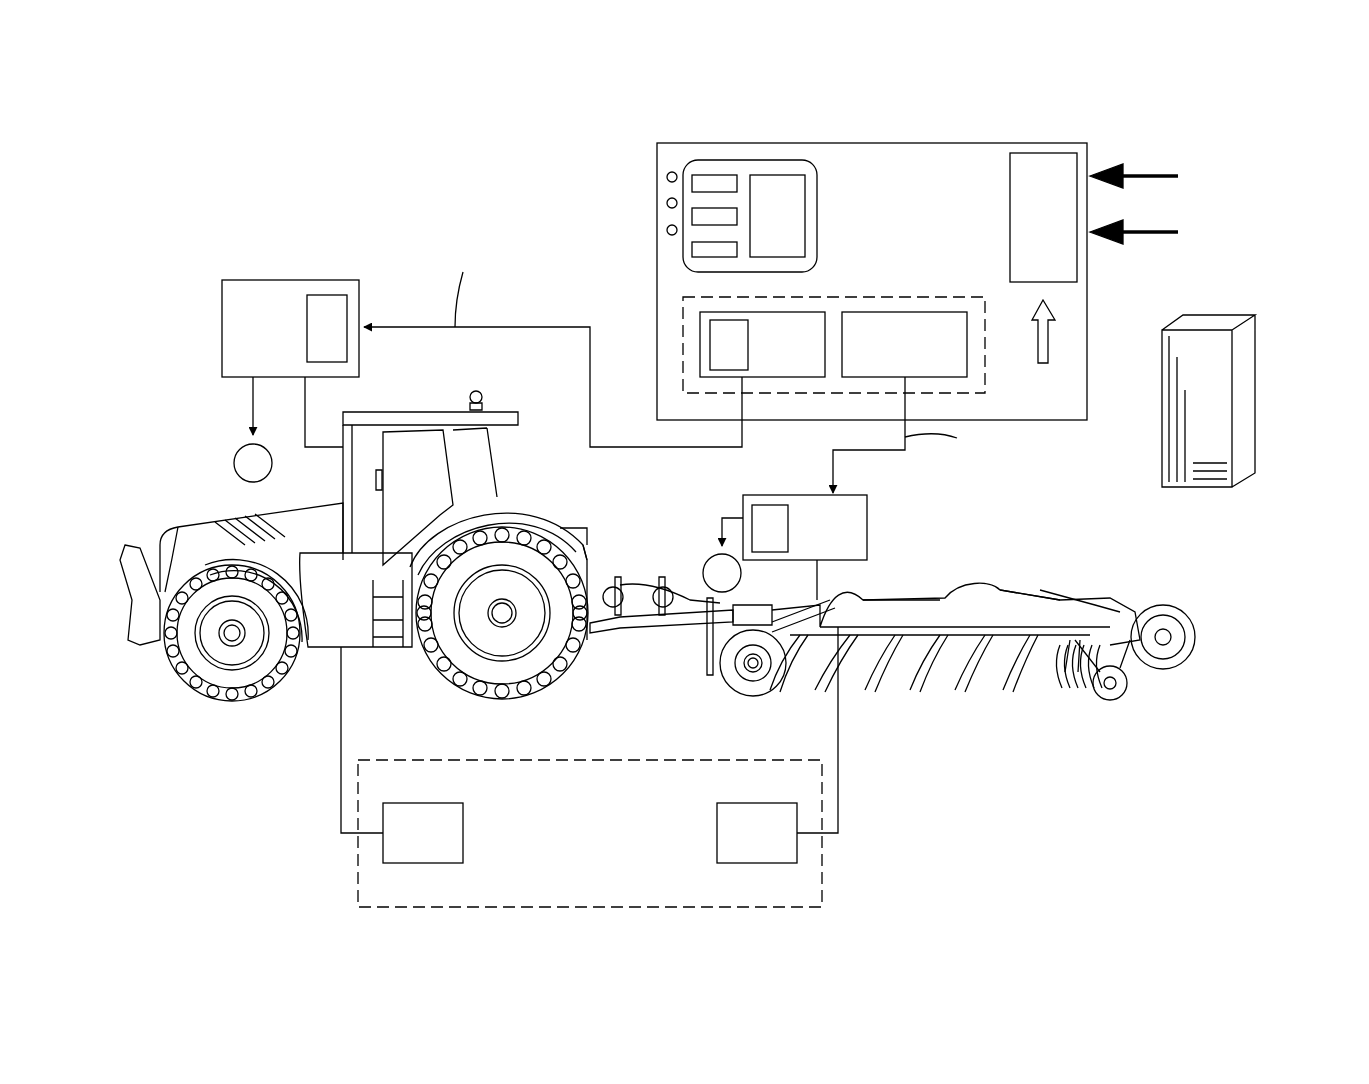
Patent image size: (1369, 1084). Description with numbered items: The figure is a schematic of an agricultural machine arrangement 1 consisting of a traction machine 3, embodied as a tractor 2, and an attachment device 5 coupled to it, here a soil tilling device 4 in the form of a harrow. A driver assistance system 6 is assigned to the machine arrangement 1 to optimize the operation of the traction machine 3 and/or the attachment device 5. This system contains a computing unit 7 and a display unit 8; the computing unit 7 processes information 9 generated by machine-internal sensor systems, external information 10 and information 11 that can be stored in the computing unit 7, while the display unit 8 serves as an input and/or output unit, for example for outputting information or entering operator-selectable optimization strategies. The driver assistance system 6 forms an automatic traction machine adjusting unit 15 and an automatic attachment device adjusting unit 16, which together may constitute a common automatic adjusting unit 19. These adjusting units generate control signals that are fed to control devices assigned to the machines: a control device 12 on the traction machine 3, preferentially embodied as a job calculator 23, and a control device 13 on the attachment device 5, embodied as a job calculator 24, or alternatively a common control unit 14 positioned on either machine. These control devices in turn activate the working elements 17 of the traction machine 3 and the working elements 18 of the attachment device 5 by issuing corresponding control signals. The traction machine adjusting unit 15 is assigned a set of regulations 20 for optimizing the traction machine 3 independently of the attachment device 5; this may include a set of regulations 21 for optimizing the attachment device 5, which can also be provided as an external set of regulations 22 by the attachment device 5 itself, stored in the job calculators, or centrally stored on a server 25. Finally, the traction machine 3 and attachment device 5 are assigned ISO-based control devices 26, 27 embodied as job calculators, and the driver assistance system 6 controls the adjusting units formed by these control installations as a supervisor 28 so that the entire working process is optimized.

The agricultural machine arrangement 1 is at (158, 695).
The tractor 2 is at (354, 546).
The traction machine 3 is at (182, 527).
The soil tilling device 4 is at (923, 625).
The attachment device 5 is at (1134, 596).
The driver assistance system 6 is at (1087, 362).
The computing unit 7 is at (1052, 229).
The display unit 8 is at (747, 172).
The information generated by machine-internal sensor systems 9 is at (1145, 176).
The external information 10 is at (1160, 240).
The stored information 11 is at (1040, 340).
The control device 12 is at (253, 276).
The control device 13 is at (802, 504).
The common control unit 14 is at (538, 368).
The automatic traction machine adjusting unit 15 is at (799, 357).
The automatic attachment device adjusting unit 16 is at (918, 357).
The working elements of the traction machine 17 is at (197, 415).
The working elements of the attachment device 18 is at (665, 527).
The common automatic adjusting unit 19 is at (700, 298).
The set of regulations 20 is at (722, 353).
The set of regulations for optimizing the attachment device 21 is at (322, 308).
The external set of regulations 22 is at (766, 520).
The job calculator 23 is at (234, 276).
The job calculator 24 is at (752, 485).
The server 25 is at (1240, 308).
The ISO-based control device 26 is at (437, 845).
The ISO-based control device 27 is at (675, 870).
The supervisor 28 is at (588, 775).